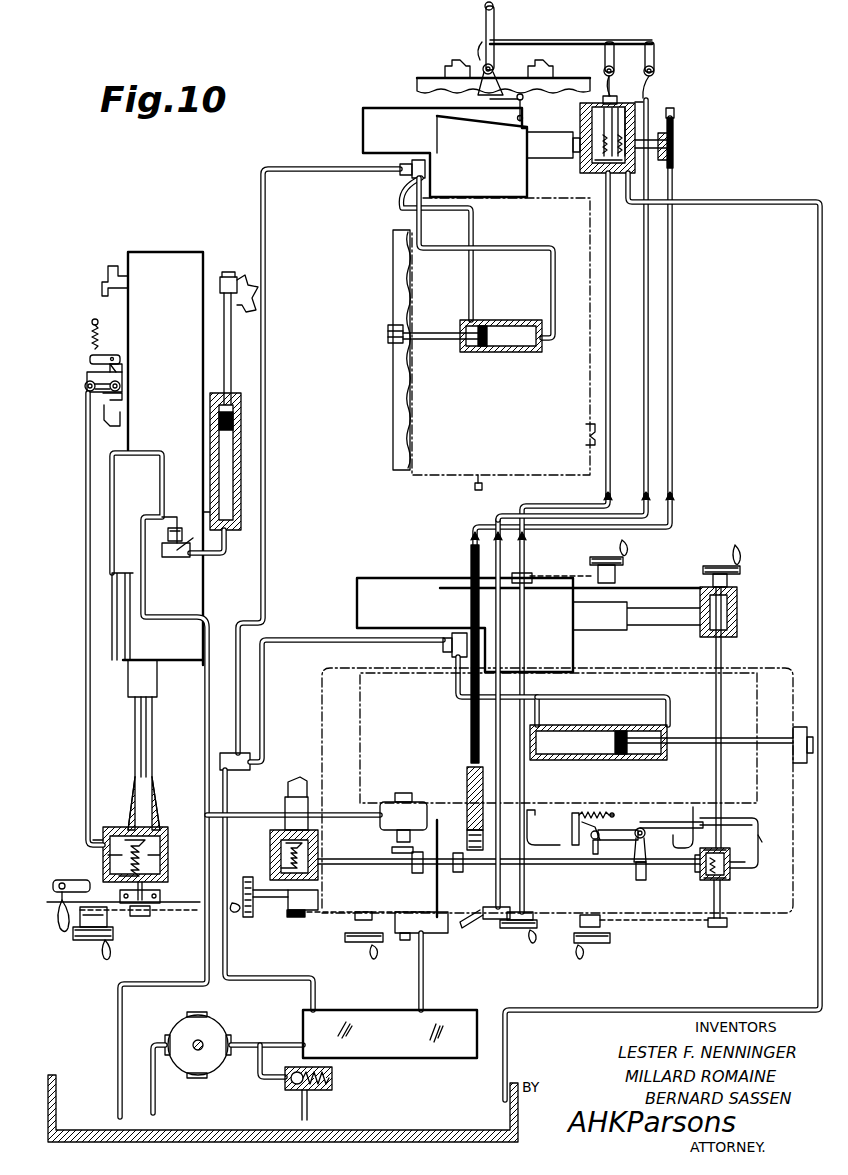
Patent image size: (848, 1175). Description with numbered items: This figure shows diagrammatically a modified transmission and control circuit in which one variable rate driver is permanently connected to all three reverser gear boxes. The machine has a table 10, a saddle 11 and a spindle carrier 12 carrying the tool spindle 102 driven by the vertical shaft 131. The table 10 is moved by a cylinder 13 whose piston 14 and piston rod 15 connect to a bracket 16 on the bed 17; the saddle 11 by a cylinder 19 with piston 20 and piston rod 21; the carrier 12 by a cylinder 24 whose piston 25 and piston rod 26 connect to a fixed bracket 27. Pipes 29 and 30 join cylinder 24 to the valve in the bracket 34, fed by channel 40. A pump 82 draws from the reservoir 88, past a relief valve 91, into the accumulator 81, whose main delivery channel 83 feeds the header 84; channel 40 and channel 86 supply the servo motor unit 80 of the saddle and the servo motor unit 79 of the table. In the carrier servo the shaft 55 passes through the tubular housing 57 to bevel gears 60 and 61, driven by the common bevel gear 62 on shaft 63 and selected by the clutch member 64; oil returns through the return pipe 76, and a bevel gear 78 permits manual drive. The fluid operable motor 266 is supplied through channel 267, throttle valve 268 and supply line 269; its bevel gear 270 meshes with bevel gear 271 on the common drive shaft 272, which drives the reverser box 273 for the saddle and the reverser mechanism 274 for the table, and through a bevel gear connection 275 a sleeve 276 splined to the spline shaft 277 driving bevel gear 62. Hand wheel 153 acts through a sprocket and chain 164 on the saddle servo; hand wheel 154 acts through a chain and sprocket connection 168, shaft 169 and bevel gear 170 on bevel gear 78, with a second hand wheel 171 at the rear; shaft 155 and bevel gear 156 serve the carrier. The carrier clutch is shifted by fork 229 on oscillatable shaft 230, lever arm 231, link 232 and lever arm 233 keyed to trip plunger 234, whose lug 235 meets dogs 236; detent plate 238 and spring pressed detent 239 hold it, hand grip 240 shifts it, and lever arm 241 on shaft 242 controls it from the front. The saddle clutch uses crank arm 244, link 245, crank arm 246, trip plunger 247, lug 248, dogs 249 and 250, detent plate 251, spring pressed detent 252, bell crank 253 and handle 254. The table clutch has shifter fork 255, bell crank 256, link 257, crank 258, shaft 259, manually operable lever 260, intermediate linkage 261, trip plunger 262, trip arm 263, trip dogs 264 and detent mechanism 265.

The table 10 is at (745, 694).
The saddle 11 is at (140, 262).
The spindle carrier 12 is at (416, 75).
The cylinder 13 is at (575, 760).
The piston 14 is at (620, 755).
The piston rod 15 is at (680, 746).
The bracket 16 is at (795, 766).
The bed 17 is at (237, 275).
The cylinder 19 is at (244, 465).
The piston 20 is at (236, 424).
The piston rod 21 is at (232, 378).
The cylinder 24 is at (512, 352).
The piston 25 is at (482, 347).
The piston rod 26 is at (430, 342).
The fixed bracket 27 is at (388, 340).
The pipe 29 is at (472, 224).
The pipe 30 is at (490, 252).
The bracket 34 is at (516, 182).
The channel 40 is at (306, 174).
The shaft 55 is at (576, 152).
The tubular housing 57 is at (545, 158).
The bevel gear 60 is at (603, 99).
The bevel gear 61 is at (650, 122).
The common bevel gear 62 is at (592, 176).
The shaft 63 is at (612, 232).
The clutch member 64 is at (620, 96).
The return pipe 76 is at (544, 112).
The bevel gear 78 is at (666, 150).
The servo motor unit 79 is at (575, 646).
The servo motor unit 80 is at (196, 590).
The accumulator 81 is at (465, 1017).
The pump 82 is at (210, 1035).
The main delivery channel 83 is at (315, 993).
The header 84 is at (218, 765).
The channel 86 is at (263, 677).
The reservoir 88 is at (62, 1080).
The relief valve 91 is at (287, 1090).
The tool spindle 102 is at (474, 486).
The vertical shaft 131 is at (585, 426).
The hand wheel 153 is at (90, 942).
The hand wheel 154 is at (590, 948).
The shaft 155 is at (674, 258).
The bevel gear 156 is at (676, 134).
The sprocket and chain 164 is at (150, 915).
The chain and sprocket connection 168 is at (652, 924).
The shaft 169 is at (722, 899).
The bevel gear 170 is at (738, 618).
The second hand wheel 171 is at (742, 569).
The fork 229 is at (605, 72).
The oscillatable shaft 230 is at (612, 74).
The lever arm 231 is at (605, 48).
The link 232 is at (552, 38).
The lever arm 233 is at (494, 28).
The trip plunger 234 is at (484, 66).
The lug 235 is at (480, 52).
The dogs 236 is at (447, 68).
The detent plate 238 is at (478, 95).
The spring pressed detent 239 is at (524, 98).
The hand grip 240 is at (487, 8).
The lever arm 241 is at (654, 60).
The shaft 242 is at (655, 72).
The crank arm 244 is at (88, 842).
The link 245 is at (88, 450).
The crank arm 246 is at (90, 376).
The trip plunger 247 is at (121, 386).
The lug 248 is at (122, 398).
The dog 249 is at (121, 415).
The dog 250 is at (108, 275).
The detent plate 251 is at (122, 372).
The spring pressed detent 252 is at (112, 356).
The bell crank 253 is at (72, 880).
The manually operable handle 254 is at (60, 930).
The shifter fork 255 is at (730, 855).
The bell crank 256 is at (760, 840).
The link 257 is at (742, 817).
The crank 258 is at (622, 830).
The shaft 259 is at (646, 834).
The manually operable lever 260 is at (640, 880).
The intermediate linkage 261 is at (612, 812).
The trip plunger 262 is at (598, 845).
The trip arm 263 is at (596, 856).
The trip dogs 264 is at (692, 812).
The detent mechanism 265 is at (580, 852).
The fluid operable motor 266 is at (418, 800).
The channel 267 is at (424, 973).
The throttle valve 268 is at (428, 933).
The supply line 269 is at (436, 903).
The bevel gear 270 is at (391, 850).
The bevel gear 271 is at (413, 873).
The common drive shaft 272 is at (345, 865).
The reverser box 273 is at (270, 858).
The reverser mechanism 274 is at (703, 870).
The bevel gear connection 275 is at (456, 852).
The sleeve 276 is at (466, 790).
The spline shaft 277 is at (470, 755).